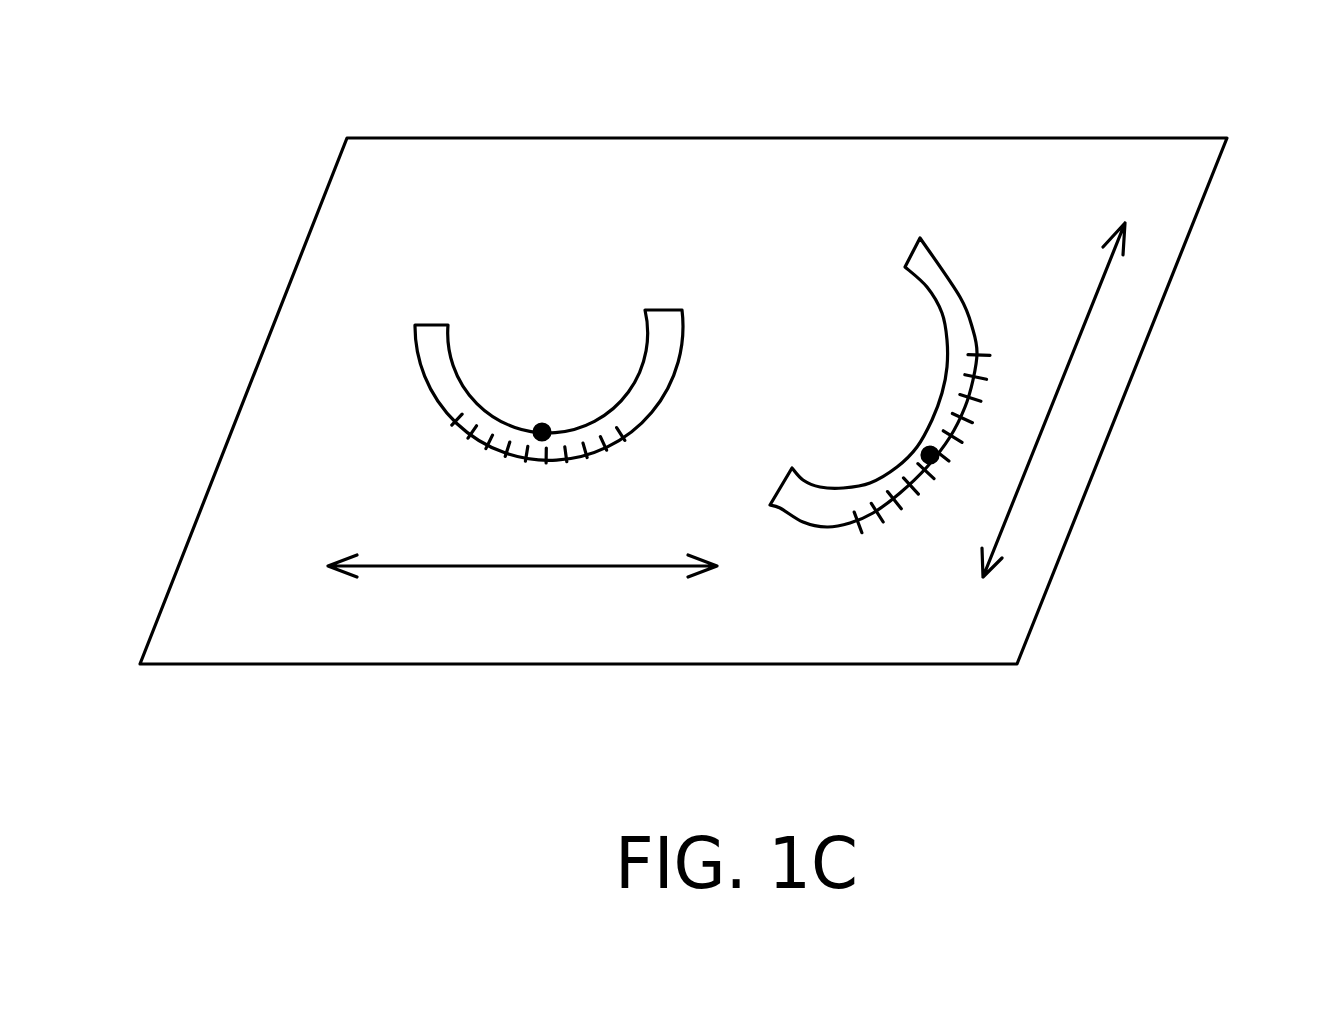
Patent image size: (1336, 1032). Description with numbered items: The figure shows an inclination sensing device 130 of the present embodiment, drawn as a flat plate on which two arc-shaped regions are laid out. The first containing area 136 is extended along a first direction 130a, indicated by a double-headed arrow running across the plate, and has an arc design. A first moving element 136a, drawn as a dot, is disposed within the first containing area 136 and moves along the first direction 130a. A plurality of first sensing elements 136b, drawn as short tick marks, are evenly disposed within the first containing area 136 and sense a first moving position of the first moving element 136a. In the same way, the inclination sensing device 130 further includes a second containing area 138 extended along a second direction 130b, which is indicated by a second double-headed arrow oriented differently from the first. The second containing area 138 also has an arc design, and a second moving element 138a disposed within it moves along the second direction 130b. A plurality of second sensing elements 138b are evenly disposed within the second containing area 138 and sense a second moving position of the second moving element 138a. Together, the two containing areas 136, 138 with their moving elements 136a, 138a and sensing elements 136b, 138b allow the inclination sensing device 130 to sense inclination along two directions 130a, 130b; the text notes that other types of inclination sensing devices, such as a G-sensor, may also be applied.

The inclination sensing device 130 is at (1173, 709).
The first direction 130a is at (520, 567).
The second direction 130b is at (1055, 400).
The first containing area 136 is at (428, 345).
The first moving element 136a is at (544, 430).
The first sensing elements 136b is at (453, 420).
The second containing area 138 is at (935, 270).
The second moving element 138a is at (920, 447).
The second sensing elements 138b is at (967, 353).